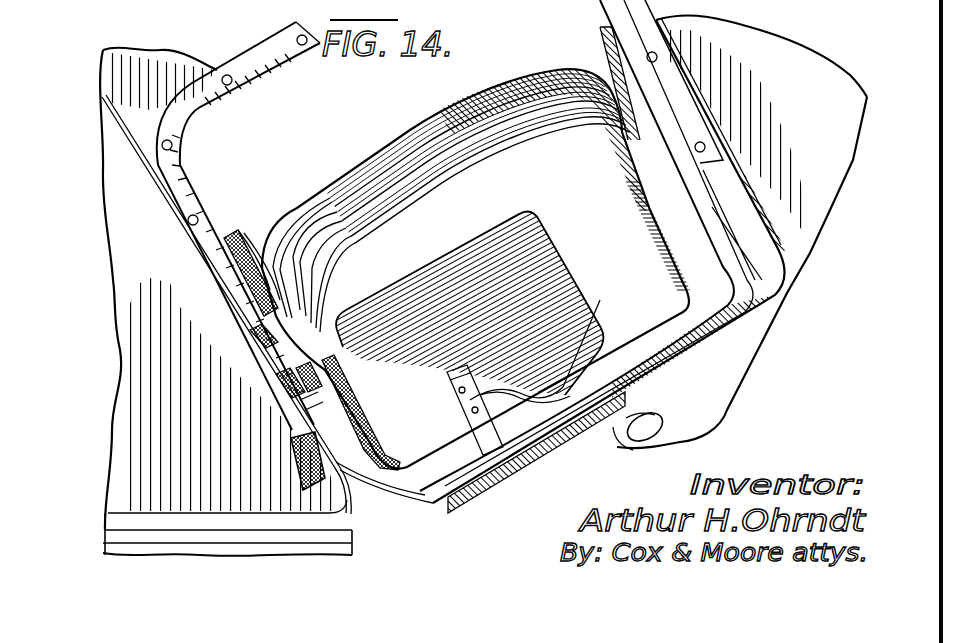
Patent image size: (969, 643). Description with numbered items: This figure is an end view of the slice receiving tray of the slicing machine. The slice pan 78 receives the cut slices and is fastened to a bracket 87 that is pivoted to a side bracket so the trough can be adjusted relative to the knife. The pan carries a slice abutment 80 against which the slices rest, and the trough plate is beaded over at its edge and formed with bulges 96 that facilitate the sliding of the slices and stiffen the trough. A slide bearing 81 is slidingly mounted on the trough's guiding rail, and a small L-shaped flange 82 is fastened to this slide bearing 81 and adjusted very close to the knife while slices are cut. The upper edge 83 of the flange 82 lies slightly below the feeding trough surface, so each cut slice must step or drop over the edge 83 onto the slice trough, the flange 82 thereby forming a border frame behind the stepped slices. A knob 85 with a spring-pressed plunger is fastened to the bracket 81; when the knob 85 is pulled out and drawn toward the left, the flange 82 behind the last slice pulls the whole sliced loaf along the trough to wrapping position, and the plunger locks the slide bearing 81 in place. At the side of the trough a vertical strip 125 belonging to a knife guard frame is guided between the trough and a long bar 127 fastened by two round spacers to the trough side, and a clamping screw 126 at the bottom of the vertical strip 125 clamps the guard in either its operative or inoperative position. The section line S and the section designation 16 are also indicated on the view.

The sealing strip S is at (383, 155).
The section line 16 is at (476, 222).
The slice pan 78 is at (307, 327).
The slice abutment 80 is at (458, 403).
The slide bearing 81 is at (638, 345).
The flange 82 is at (357, 423).
The upper edge 83 is at (453, 440).
The knob 85 is at (667, 420).
The bracket 87 is at (633, 78).
The bulges 96 is at (546, 342).
The vertical strip 125 is at (300, 405).
The clamping screw 126 is at (345, 510).
The long bar 127 is at (312, 378).